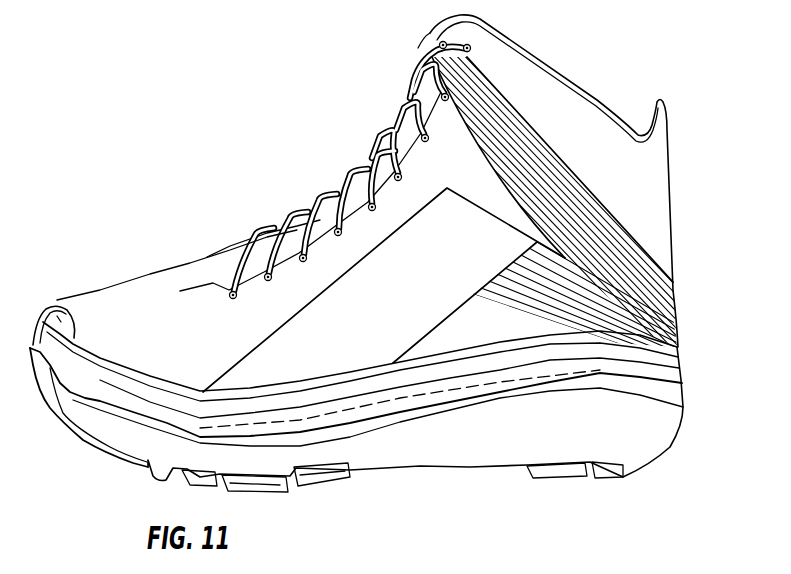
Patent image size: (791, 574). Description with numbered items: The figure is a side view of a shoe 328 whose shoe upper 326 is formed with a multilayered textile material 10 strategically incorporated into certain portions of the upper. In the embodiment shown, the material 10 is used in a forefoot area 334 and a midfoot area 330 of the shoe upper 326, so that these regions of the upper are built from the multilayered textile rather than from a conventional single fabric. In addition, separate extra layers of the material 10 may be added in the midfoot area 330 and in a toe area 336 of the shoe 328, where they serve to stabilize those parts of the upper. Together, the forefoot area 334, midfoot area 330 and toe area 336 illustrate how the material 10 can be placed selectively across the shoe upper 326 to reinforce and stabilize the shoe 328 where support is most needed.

The material 10 is at (390, 288).
The shoe upper 326 is at (563, 195).
The shoe 328 is at (273, 222).
The midfoot area 330 is at (410, 347).
The forefoot area 334 is at (197, 323).
The toe area 336 is at (58, 302).